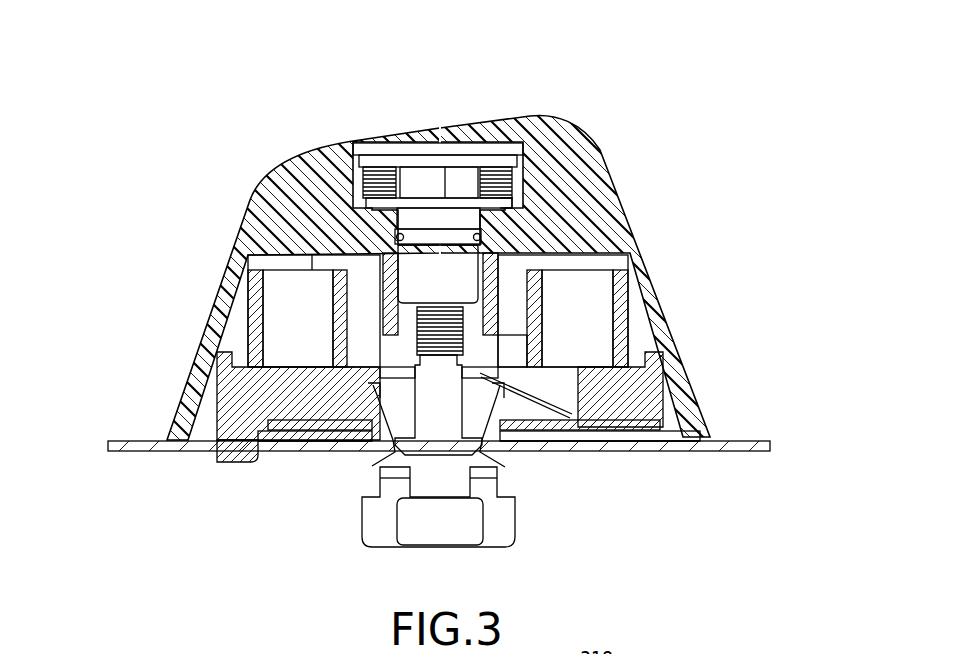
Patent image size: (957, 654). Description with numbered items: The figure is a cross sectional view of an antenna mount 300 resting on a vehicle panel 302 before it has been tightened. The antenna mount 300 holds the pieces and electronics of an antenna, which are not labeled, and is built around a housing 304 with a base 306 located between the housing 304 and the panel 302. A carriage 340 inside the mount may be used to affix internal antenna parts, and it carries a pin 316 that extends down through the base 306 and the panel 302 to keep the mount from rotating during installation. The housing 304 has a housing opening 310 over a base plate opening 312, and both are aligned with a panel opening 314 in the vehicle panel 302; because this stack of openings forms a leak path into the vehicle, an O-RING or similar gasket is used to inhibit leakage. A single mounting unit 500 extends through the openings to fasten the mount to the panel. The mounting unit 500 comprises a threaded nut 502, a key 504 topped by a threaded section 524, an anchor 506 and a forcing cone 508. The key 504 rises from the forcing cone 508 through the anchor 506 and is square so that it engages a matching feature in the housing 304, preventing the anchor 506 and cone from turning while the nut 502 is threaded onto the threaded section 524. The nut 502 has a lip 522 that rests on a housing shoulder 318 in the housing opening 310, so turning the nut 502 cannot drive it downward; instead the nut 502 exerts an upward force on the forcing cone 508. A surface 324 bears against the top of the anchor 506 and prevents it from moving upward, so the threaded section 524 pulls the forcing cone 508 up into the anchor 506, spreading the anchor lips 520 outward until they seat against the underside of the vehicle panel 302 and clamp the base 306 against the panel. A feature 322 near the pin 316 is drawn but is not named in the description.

The antenna mount 300 is at (115, 204).
The vehicle panel 302 is at (739, 462).
The housing 304 is at (652, 262).
The base 306 is at (640, 437).
The housing opening 310 is at (533, 95).
The base plate opening 312 is at (368, 438).
The panel opening 314 is at (370, 453).
The pin 316 is at (236, 463).
The housing shoulder 318 is at (349, 198).
The notch 322 is at (260, 468).
The surface 324 is at (367, 387).
The carriage 340 is at (653, 366).
The mounting unit 500 is at (373, 234).
The threaded nut 502 is at (467, 279).
The key 504 is at (425, 372).
The anchor 506 is at (500, 420).
The forcing cone 508 is at (472, 519).
The anchor lip 520 is at (506, 476).
The lip 522 is at (512, 202).
The threaded section 524 is at (418, 330).
The o-ring O-RING is at (477, 233).